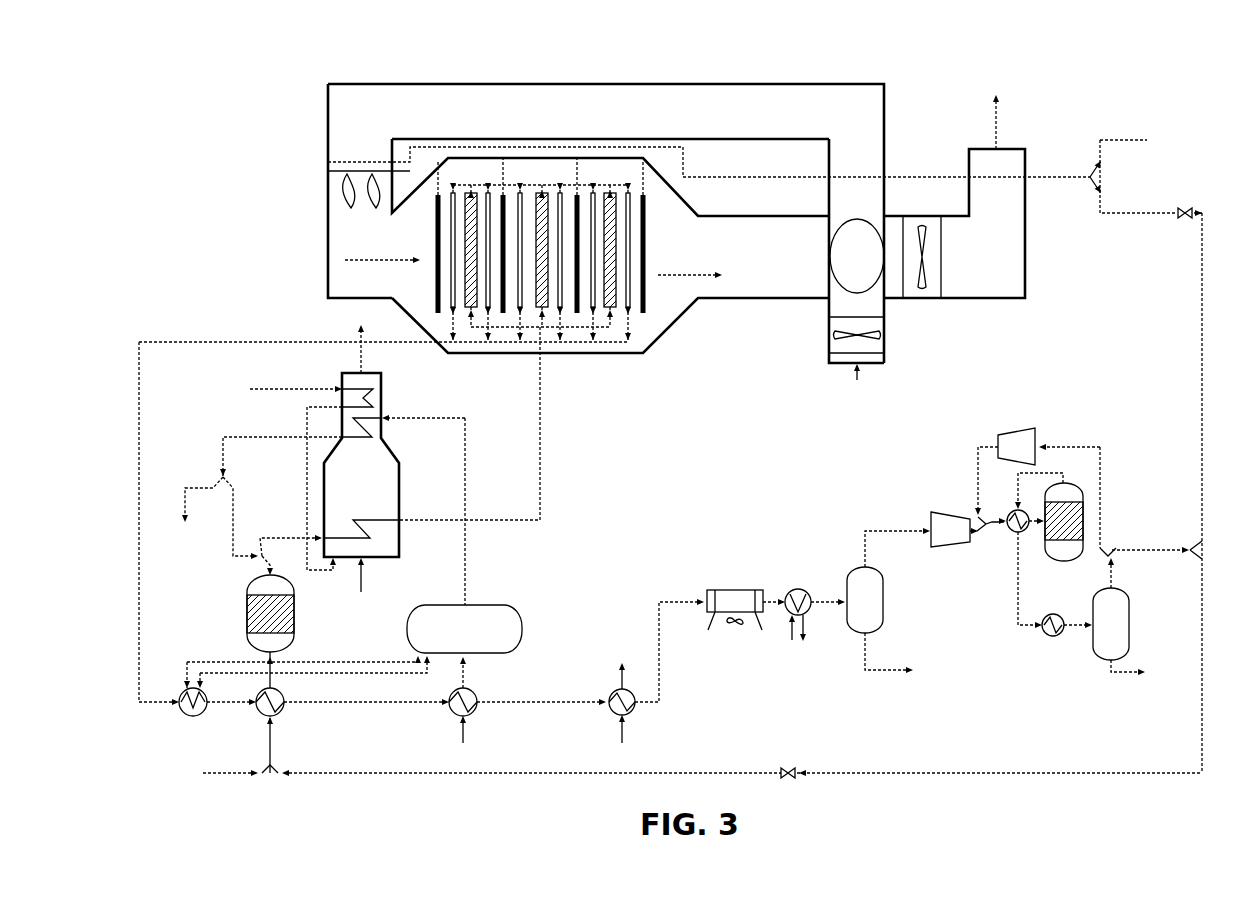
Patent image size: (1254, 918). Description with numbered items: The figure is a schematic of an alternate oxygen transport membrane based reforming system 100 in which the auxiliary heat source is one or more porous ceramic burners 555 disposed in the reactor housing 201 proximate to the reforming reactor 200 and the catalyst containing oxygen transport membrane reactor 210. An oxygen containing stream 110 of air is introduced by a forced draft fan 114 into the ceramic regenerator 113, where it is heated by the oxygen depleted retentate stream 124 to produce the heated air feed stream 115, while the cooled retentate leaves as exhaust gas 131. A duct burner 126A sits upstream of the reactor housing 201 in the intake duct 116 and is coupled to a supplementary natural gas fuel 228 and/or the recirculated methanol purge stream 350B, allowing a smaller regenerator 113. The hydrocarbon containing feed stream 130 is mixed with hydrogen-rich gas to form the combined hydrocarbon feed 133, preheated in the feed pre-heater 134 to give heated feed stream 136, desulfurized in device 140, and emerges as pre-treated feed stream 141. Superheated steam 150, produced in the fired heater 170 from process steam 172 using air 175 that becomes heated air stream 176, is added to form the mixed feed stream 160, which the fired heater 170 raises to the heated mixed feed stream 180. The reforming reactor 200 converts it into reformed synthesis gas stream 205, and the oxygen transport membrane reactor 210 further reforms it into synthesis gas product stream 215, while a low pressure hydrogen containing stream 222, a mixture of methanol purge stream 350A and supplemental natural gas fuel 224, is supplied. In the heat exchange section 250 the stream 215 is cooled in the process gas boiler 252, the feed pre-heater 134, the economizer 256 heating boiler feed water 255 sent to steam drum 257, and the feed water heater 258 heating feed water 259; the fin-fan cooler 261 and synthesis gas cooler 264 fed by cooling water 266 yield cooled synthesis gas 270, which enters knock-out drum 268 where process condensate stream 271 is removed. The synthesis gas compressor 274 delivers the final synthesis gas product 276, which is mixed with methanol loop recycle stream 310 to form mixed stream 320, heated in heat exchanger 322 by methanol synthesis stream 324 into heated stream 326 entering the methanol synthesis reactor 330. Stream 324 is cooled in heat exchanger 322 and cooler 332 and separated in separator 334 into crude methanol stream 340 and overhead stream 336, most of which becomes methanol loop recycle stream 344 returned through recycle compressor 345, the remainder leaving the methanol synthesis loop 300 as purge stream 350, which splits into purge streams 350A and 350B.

The oxygen transport membrane based reforming system 100 is at (270, 102).
The oxygen containing stream 110 is at (863, 376).
The ceramic regenerator 113 is at (845, 284).
The forced draft fan 114 is at (838, 344).
The heated air feed stream 115 is at (772, 124).
The intake duct 116 is at (736, 84).
The oxygen depleted retentate stream 124 is at (682, 280).
The duct burner 126A is at (345, 160).
The hydrocarbon containing feed stream 130 is at (240, 778).
The exhaust gas 131 is at (1000, 126).
The combined hydrocarbon feed 133 is at (275, 748).
The feed pre-heater 134 is at (280, 701).
The heated feed stream 136 is at (272, 676).
The sulfur removal device 140 is at (296, 618).
The pre-treated natural gas and hydrogen feed stream 141 is at (252, 590).
The superheated steam 150 is at (245, 437).
The mixed feed stream 160 is at (296, 536).
The fired heater 170 is at (385, 488).
The process steam 172 is at (462, 418).
The air 175 is at (310, 389).
The heated air stream 176 is at (307, 446).
The heated mixed feed stream 180 is at (542, 432).
The reforming reactor 200 is at (540, 192).
The reactor housing 201 is at (672, 186).
The reformed synthesis gas stream 205 is at (560, 190).
The oxygen transport membrane reactor 210 is at (520, 305).
The synthesis gas product stream 215 is at (262, 342).
The low pressure hydrogen containing stream 222 is at (925, 176).
The supplemental natural gas fuel stream 224 is at (1118, 138).
The supplementary natural gas fuel 228 is at (410, 161).
The heat exchange section 250 is at (480, 783).
The process gas boiler 252 is at (206, 713).
The boiler feed water 255 is at (460, 731).
The economizer 256 is at (452, 710).
The steam drum 257 is at (505, 604).
The feed water heater 258 is at (620, 728).
The feed water stream 259 is at (633, 712).
The fin-fan cooler 261 is at (717, 590).
The synthesis gas cooler 264 is at (812, 592).
The cooling water 266 is at (790, 636).
The knock-out drum 268 is at (878, 612).
The cooled synthesis gas 270 is at (832, 612).
The process condensate stream 271 is at (865, 673).
The synthesis gas compressor 274 is at (930, 515).
The final synthesis gas product 276 is at (969, 540).
The methanol synthesis loop 300 is at (1143, 397).
The methanol loop recycle stream 310 is at (978, 457).
The mixed stream 320 is at (988, 540).
The heat exchanger 322 is at (1010, 512).
The methanol synthesis stream 324 is at (1040, 475).
The heated stream 326 is at (1032, 532).
The methanol synthesis reactor 330 is at (1075, 490).
The cooler 332 is at (1053, 640).
The separator 334 is at (1122, 606).
The overhead stream 336 is at (1113, 575).
The crude methanol stream 340 is at (1126, 671).
The methanol loop recycle stream 344 is at (1105, 468).
The recycle compressor 345 is at (1015, 436).
The purge stream 350 is at (1190, 546).
The methanol purge stream 350A is at (1203, 334).
The methanol purge stream 350B is at (1203, 642).
The ceramic burners 555 is at (462, 190).